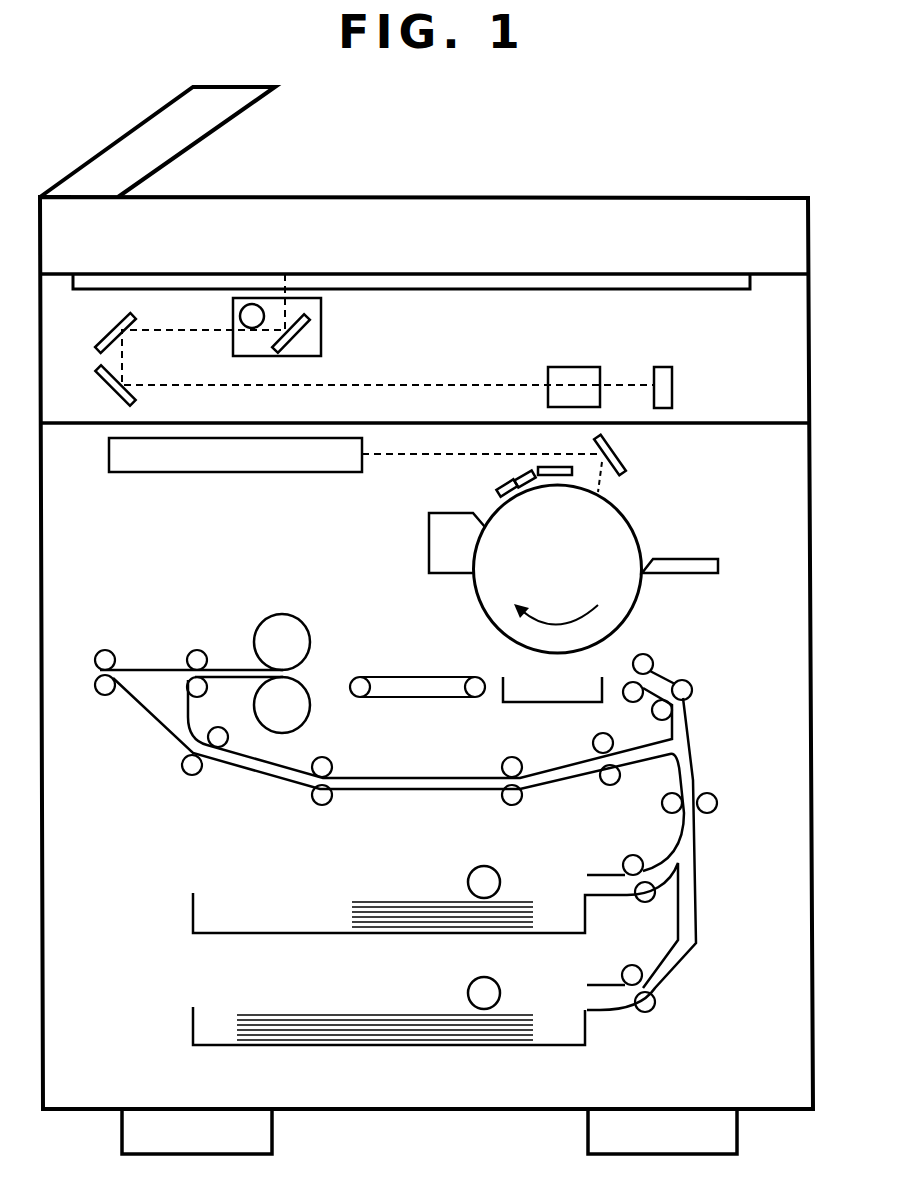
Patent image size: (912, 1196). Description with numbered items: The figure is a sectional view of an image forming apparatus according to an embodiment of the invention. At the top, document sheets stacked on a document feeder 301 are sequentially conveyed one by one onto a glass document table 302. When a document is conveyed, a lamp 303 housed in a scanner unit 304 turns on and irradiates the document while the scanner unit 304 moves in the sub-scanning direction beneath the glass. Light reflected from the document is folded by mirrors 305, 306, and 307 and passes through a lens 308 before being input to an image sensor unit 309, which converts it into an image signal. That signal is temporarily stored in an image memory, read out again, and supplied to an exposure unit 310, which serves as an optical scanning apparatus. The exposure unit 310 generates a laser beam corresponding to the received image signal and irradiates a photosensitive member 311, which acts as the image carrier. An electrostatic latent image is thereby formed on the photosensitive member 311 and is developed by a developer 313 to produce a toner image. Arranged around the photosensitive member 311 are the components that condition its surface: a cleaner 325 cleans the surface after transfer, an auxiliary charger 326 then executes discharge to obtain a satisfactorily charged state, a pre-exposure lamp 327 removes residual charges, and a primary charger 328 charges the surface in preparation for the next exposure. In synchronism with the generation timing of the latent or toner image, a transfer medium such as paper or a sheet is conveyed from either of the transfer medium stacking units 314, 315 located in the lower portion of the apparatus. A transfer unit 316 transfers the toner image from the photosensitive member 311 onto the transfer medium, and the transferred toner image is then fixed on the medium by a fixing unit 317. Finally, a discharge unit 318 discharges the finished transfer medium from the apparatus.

The document feeder 301 is at (222, 123).
The glass document table 302 is at (745, 291).
The lamp 303 is at (243, 300).
The scanner unit 304 is at (321, 305).
The mirror 305 is at (303, 338).
The mirror 306 is at (103, 343).
The mirror 307 is at (117, 398).
The lens 308 is at (583, 365).
The image sensor unit 309 is at (663, 365).
The exposure unit 310 is at (145, 473).
The photosensitive member 311 is at (643, 535).
The developer 313 is at (703, 574).
The transfer medium stacking unit 314 is at (193, 912).
The transfer medium stacking unit 315 is at (193, 1022).
The transfer unit 316 is at (521, 705).
The fixing unit 317 is at (279, 614).
The discharge unit 318 is at (101, 648).
The cleaner 325 is at (429, 563).
The auxiliary charger 326 is at (500, 495).
The pre-exposure lamp 327 is at (508, 472).
The primary charger 328 is at (573, 472).